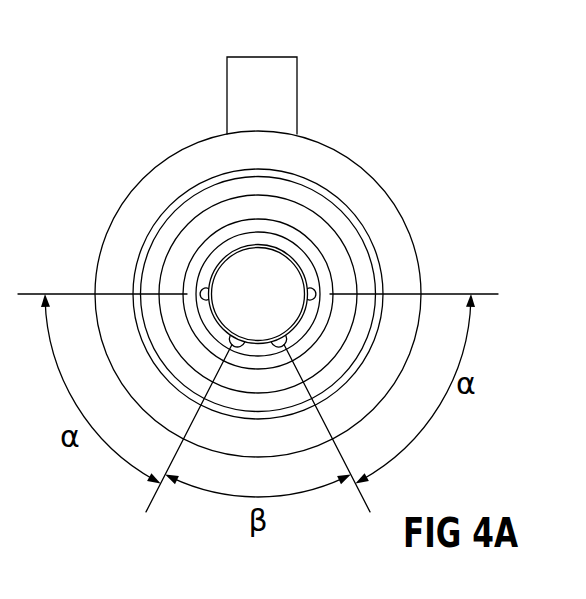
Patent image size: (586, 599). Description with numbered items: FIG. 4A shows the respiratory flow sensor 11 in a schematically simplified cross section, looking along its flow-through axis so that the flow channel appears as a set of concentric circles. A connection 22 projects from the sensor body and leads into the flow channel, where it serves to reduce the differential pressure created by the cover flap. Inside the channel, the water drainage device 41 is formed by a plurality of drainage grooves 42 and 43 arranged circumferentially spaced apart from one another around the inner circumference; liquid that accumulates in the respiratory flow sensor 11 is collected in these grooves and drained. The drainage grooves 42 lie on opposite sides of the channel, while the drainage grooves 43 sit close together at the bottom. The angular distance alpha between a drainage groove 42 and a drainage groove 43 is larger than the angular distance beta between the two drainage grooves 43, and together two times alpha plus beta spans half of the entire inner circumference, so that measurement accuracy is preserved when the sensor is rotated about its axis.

The respiratory flow sensor 11 is at (393, 103).
The connection 22 is at (262, 74).
The water drainage device 41 is at (281, 288).
The drainage grooves 42 is at (200, 290).
The drainage grooves 43 is at (228, 342).